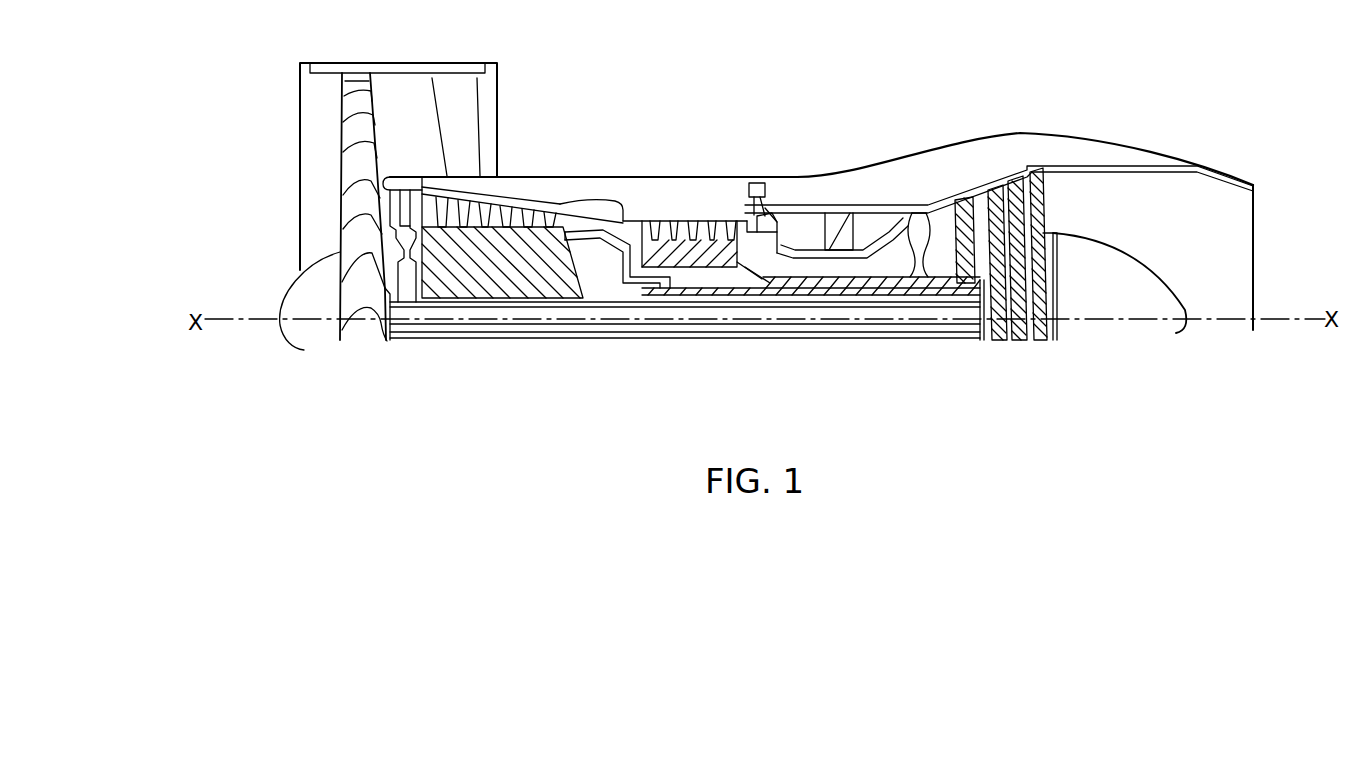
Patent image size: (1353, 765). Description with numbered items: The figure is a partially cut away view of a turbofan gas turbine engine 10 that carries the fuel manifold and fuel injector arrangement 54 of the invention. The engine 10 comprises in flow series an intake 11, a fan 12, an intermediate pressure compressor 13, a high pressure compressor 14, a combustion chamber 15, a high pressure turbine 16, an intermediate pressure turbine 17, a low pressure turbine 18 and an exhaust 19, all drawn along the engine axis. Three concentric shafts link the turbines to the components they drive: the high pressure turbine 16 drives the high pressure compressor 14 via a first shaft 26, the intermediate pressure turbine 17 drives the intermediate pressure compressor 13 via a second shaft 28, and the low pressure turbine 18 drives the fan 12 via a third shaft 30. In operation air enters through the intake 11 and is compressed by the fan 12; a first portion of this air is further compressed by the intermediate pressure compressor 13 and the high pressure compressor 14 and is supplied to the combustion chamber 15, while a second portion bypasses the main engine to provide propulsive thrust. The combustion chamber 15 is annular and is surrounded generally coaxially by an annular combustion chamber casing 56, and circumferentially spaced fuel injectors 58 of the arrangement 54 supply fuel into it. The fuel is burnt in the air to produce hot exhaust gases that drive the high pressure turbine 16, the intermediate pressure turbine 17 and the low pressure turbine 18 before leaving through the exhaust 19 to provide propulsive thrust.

The turbofan gas turbine engine 10 is at (665, 92).
The intake 11 is at (271, 194).
The fan 12 is at (372, 100).
The intermediate pressure compressor 13 is at (498, 238).
The high pressure compressor 14 is at (700, 207).
The combustion chamber 15 is at (845, 186).
The high pressure turbine 16 is at (921, 205).
The intermediate pressure turbine 17 is at (963, 198).
The low pressure turbine 18 is at (1021, 205).
The exhaust 19 is at (1237, 261).
The first shaft 26 is at (907, 275).
The second shaft 28 is at (643, 292).
The third shaft 30 is at (534, 338).
The fuel manifold and fuel injector arrangement 54 is at (764, 154).
The annular combustion chamber casing 56 is at (772, 212).
The fuel injectors 58 is at (767, 240).